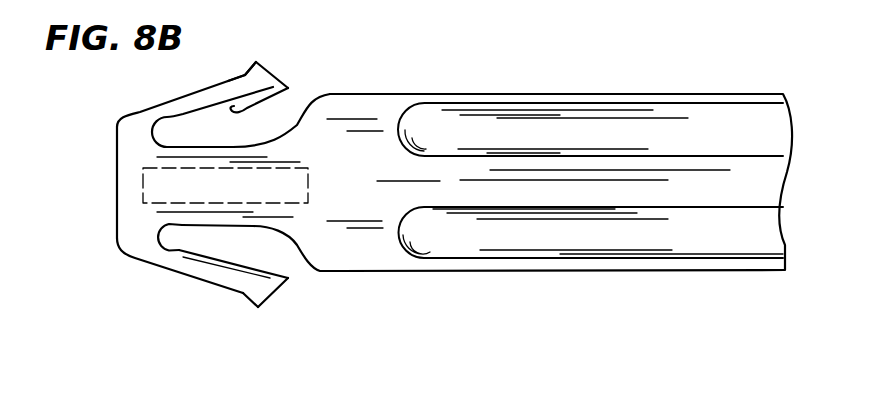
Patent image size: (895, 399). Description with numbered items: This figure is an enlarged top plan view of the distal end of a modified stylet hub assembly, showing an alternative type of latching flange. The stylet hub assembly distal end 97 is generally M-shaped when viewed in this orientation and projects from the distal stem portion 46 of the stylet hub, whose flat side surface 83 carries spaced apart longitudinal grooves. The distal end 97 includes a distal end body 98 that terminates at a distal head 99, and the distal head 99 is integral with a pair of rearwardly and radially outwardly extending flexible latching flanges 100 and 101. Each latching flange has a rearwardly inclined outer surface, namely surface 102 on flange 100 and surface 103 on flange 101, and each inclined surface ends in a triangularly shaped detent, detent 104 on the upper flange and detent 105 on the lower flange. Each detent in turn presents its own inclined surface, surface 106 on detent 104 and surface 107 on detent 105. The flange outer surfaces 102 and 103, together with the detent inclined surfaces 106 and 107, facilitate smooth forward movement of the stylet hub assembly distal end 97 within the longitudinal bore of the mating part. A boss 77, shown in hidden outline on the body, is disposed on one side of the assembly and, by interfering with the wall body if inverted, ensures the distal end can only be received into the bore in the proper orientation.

The distal stem portion 46 is at (578, 266).
The boss 77 is at (137, 204).
The flat side surface 83 is at (720, 195).
The stylet hub assembly distal end 97 is at (322, 291).
The distal end body 98 is at (165, 163).
The distal head 99 is at (116, 187).
The flexible latching flange 100 is at (294, 96).
The flexible latching flange 101 is at (221, 260).
The rearwardly inclined surface 102 is at (198, 100).
The rearwardly inclined surface 103 is at (178, 264).
The triangularly shaped detent 104 is at (253, 62).
The triangularly shaped detent 105 is at (255, 310).
The inclined surface 106 is at (242, 82).
The inclined surface 107 is at (242, 293).